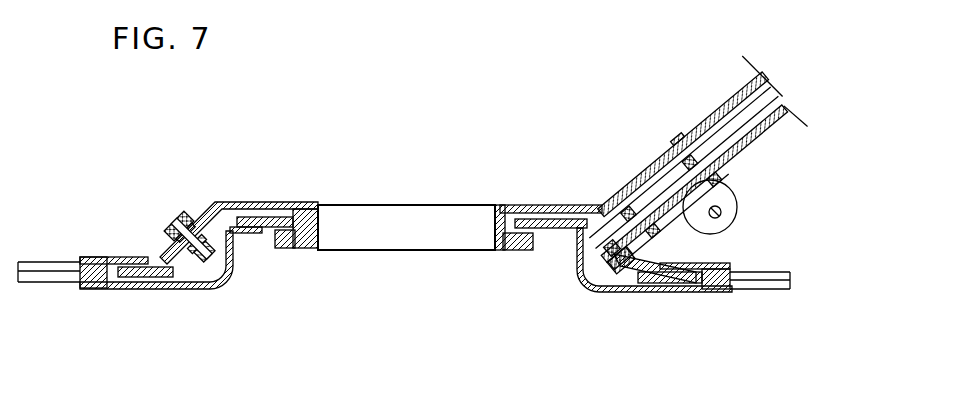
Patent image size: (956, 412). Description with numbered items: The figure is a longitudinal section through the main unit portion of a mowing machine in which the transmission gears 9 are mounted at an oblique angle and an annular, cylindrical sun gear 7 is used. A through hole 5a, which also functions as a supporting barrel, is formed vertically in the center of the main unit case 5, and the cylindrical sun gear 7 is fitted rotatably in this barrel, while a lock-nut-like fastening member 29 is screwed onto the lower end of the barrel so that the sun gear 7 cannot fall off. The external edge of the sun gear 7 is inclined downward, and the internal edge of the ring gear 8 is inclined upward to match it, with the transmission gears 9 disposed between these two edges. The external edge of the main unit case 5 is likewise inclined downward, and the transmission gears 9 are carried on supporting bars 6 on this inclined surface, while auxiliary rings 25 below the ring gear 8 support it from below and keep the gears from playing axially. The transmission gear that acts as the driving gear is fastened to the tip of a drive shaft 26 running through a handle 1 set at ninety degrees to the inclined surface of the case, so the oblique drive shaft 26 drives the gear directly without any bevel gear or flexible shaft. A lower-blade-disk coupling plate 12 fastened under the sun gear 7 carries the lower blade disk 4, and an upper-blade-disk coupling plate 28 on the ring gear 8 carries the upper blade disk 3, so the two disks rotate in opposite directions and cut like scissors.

The handle 1 is at (730, 96).
The drive shaft 26 is at (715, 148).
The upper blade disk 3 is at (758, 277).
The lower blade disk 4 is at (752, 290).
The lower-blade-disk coupling plate 12 is at (590, 294).
The main unit case 5 is at (532, 206).
The transmission gears 9 is at (200, 226).
The sun gear 7 is at (270, 204).
The through hole 5a is at (318, 240).
The fastening member 29 is at (284, 250).
The auxiliary rings 25 is at (201, 292).
The ring gear 8 is at (149, 290).
The upper-blade-disk coupling plate 28 is at (108, 258).
The supporting bars 6 is at (181, 222).